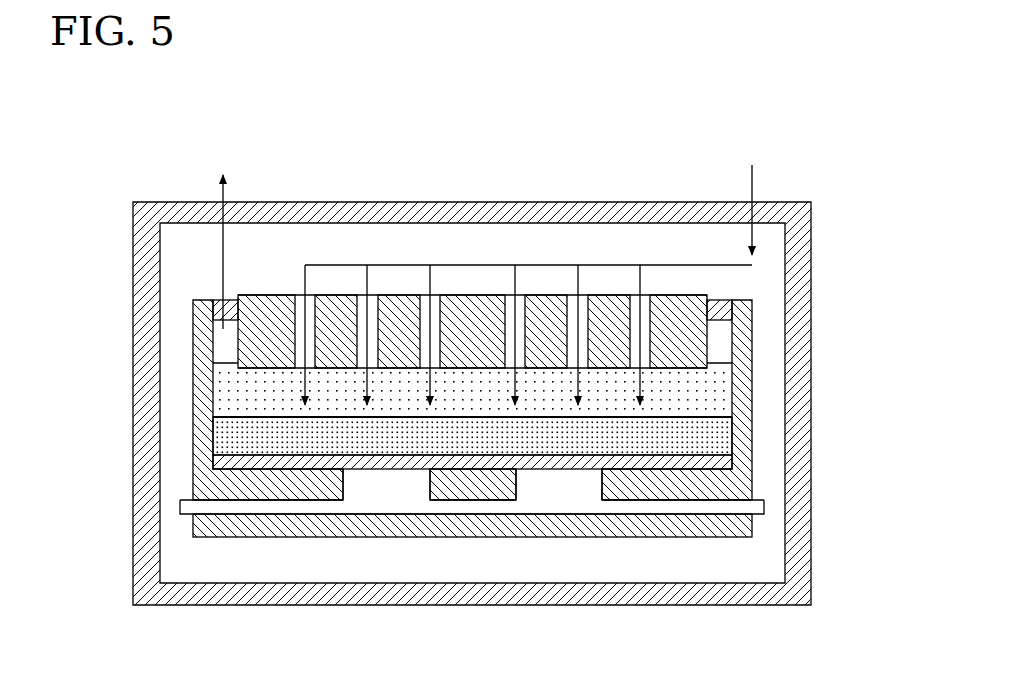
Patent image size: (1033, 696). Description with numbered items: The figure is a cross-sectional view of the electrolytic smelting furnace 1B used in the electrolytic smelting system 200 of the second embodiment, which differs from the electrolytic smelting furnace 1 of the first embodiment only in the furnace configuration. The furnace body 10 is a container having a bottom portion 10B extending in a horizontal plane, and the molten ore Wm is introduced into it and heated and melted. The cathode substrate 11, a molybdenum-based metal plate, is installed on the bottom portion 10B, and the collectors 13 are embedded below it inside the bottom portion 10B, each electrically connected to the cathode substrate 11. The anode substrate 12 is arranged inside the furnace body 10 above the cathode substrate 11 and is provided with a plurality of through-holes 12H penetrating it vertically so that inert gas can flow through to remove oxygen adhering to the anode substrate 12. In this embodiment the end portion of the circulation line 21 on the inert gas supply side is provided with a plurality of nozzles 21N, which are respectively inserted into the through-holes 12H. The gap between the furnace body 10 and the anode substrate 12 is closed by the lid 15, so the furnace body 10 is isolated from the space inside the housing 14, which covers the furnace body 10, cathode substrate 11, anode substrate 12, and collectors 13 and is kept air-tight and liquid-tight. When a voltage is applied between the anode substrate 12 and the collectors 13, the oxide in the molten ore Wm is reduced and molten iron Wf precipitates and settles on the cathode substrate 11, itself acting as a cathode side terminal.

The electrolytic smelting furnace 1 is at (814, 355).
The electrolytic smelting furnace 1B is at (80, 163).
The electrolytic smelting system 200 is at (884, 141).
The furnace body 10 is at (744, 432).
The bottom portion 10B is at (477, 500).
The cathode substrate 11 is at (278, 460).
The collector 13 is at (400, 505).
The housing 14 is at (812, 512).
The molten iron Wf is at (225, 450).
The molten ore Wm is at (225, 395).
The anode substrate 12 is at (245, 344).
The through-holes 12H is at (362, 292).
The lid 15 is at (745, 302).
The nozzles 21N is at (486, 264).
The circulation line 21 is at (221, 186).